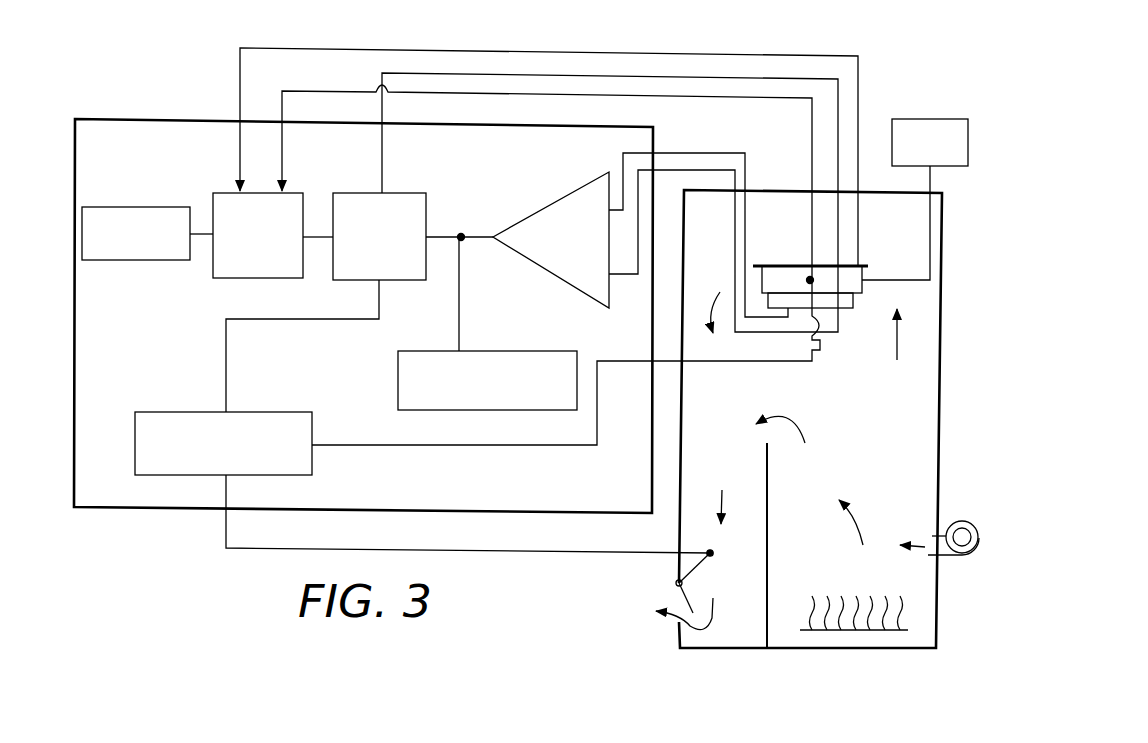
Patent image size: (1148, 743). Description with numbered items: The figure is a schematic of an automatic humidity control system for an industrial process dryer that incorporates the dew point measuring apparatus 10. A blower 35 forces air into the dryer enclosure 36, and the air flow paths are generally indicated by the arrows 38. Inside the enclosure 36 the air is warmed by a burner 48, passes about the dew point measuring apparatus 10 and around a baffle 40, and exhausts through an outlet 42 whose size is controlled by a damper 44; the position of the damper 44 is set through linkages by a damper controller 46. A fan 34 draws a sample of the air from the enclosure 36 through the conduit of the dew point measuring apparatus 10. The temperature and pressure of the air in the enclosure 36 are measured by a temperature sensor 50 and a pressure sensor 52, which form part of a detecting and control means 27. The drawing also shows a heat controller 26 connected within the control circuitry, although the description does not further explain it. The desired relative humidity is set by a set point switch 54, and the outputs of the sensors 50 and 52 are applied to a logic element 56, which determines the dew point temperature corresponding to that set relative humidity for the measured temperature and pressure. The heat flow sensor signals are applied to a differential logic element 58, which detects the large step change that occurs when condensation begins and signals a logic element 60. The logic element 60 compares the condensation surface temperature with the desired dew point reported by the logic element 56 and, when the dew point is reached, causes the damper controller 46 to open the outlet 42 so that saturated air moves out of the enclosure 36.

The dew point measuring apparatus 10 is at (872, 260).
The heat controller 26 is at (490, 411).
The detecting and control means 27 is at (176, 516).
The fan 34 is at (950, 118).
The blower 35 is at (960, 522).
The dryer enclosure 36 is at (939, 372).
The arrows 38 is at (715, 340).
The baffle 40 is at (770, 476).
The outlet 42 is at (672, 619).
The damper 44 is at (676, 588).
The damper controller 46 is at (312, 470).
The burner 48 is at (905, 611).
The temperature sensor 50 is at (810, 278).
The pressure sensor 52 is at (862, 265).
The set point switch 54 is at (140, 260).
The logic element 56 is at (237, 278).
The differential logic element 58 is at (560, 272).
The logic element 60 is at (393, 278).